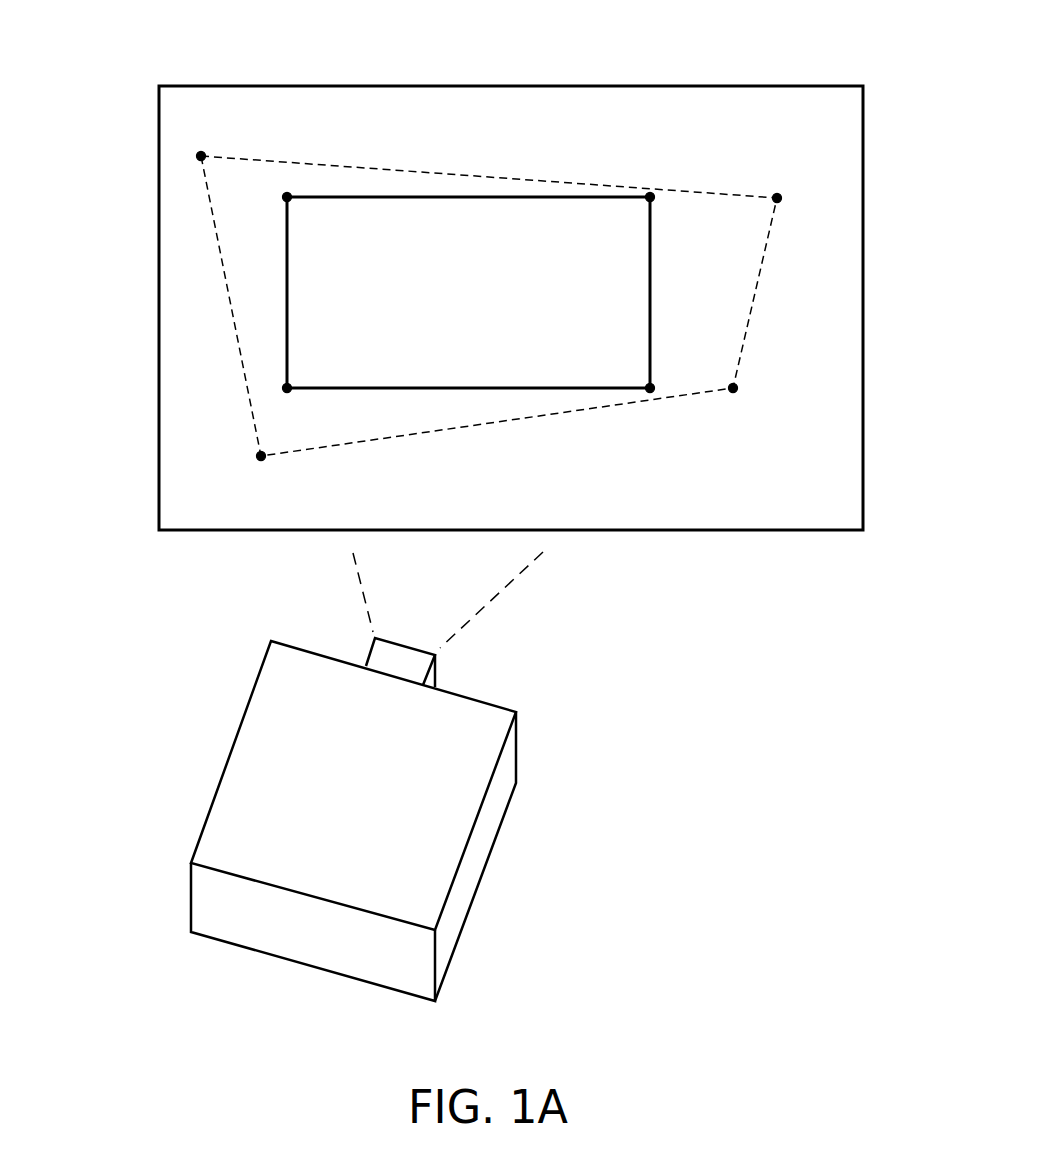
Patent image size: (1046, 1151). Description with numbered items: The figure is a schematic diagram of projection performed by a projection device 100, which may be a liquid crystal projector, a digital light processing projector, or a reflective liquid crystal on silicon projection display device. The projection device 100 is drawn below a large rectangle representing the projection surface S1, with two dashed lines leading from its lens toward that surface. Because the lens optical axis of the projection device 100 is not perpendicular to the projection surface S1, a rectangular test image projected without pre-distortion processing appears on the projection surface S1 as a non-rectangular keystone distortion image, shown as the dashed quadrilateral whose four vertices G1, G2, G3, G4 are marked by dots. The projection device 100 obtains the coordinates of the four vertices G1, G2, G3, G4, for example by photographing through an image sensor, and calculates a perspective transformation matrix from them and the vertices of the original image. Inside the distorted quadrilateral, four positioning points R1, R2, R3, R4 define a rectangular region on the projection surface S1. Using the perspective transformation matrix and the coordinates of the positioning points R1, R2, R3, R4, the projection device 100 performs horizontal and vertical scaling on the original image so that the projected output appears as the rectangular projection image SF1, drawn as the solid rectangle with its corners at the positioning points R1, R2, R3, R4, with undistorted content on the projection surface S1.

The projection device 100 is at (218, 780).
The projection surface S1 is at (800, 145).
The rectangular projection image SF1 is at (382, 196).
The positioning point R1 is at (287, 197).
The positioning point R2 is at (650, 196).
The positioning point R3 is at (650, 390).
The positioning point R4 is at (287, 388).
The vertex of the keystone distortion image G1 is at (201, 156).
The vertex of the keystone distortion image G2 is at (777, 198).
The vertex of the keystone distortion image G3 is at (733, 388).
The vertex of the keystone distortion image G4 is at (261, 456).